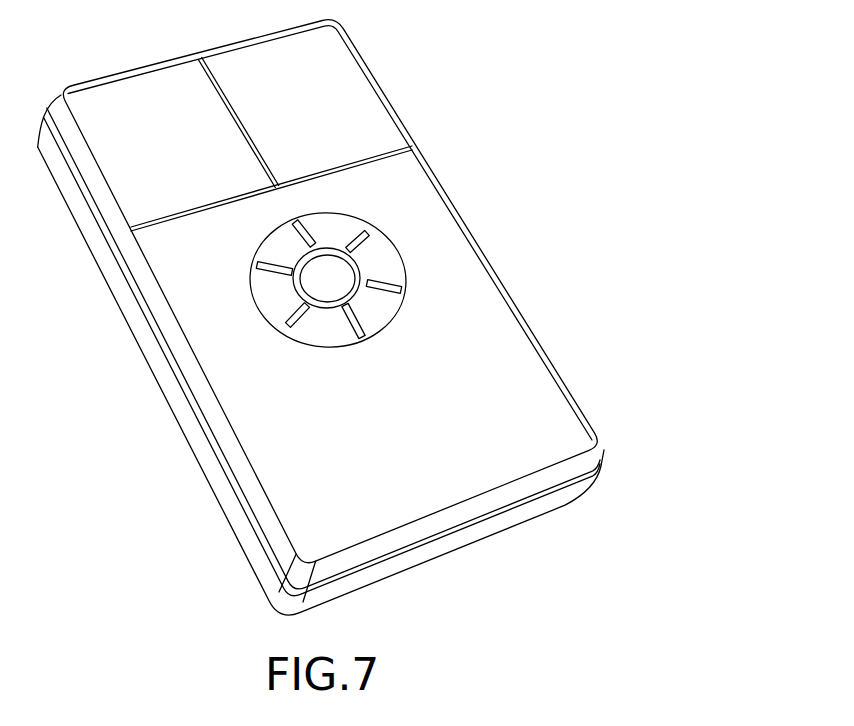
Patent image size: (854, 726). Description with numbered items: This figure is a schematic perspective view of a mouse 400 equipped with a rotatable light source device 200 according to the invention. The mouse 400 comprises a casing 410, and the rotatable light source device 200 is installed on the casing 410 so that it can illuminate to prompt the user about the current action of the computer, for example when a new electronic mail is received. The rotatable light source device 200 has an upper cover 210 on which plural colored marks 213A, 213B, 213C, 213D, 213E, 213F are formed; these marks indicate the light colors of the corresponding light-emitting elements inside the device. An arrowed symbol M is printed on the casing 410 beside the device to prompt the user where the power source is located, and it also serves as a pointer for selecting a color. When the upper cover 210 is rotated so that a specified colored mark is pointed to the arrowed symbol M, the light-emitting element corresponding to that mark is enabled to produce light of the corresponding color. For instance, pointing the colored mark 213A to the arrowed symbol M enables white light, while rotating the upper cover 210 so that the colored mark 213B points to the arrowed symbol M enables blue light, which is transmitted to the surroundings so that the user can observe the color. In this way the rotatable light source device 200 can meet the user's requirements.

The mouse 400 is at (537, 56).
The casing 410 is at (507, 333).
The rotatable light source device 200 is at (348, 287).
The upper cover 210 is at (386, 313).
The colored mark 213A is at (350, 326).
The colored mark 213B is at (401, 282).
The colored mark 213C is at (360, 240).
The colored mark 213D is at (293, 229).
The colored mark 213E is at (256, 269).
The colored mark 213F is at (285, 321).
The arrowed symbol M is at (367, 349).